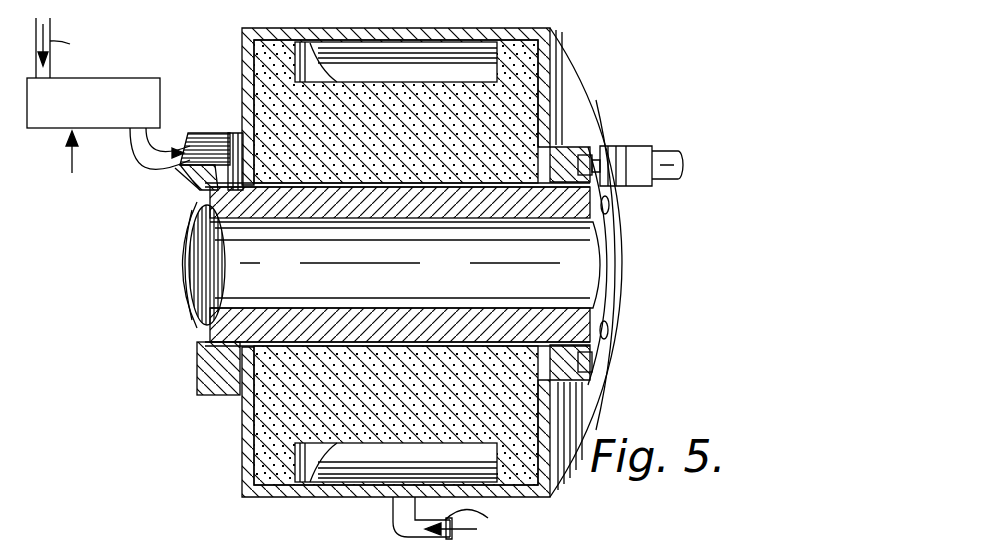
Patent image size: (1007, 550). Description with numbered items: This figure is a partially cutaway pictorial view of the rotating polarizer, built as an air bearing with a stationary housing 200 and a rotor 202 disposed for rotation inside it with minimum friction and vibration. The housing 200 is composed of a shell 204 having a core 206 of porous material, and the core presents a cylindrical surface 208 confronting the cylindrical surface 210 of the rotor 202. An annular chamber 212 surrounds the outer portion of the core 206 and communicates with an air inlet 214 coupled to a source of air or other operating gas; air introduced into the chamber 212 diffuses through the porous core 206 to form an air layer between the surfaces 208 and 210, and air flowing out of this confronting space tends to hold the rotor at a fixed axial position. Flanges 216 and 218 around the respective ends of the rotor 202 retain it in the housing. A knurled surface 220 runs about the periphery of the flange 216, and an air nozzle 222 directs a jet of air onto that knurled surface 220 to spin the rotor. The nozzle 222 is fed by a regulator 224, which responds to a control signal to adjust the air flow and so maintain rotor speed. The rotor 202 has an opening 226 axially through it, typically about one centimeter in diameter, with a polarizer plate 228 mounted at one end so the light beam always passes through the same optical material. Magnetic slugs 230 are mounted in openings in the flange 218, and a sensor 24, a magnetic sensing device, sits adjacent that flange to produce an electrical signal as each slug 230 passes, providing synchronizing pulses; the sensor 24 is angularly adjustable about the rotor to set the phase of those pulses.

The stationary housing 200 is at (564, 52).
The rotor 202 is at (588, 207).
The shell 204 is at (256, 30).
The core 206 is at (517, 123).
The cylindrical surface 208 is at (290, 184).
The cylindrical surface 210 is at (297, 188).
The annular chamber 212 is at (414, 70).
The air inlet 214 is at (402, 521).
The flange 216 is at (204, 194).
The flange 218 is at (580, 381).
The knurled surface 220 is at (200, 138).
The air nozzle 222 is at (147, 167).
The regulator 224 is at (42, 124).
The opening 226 is at (592, 268).
The polarizer plate 228 is at (201, 277).
The magnetic slugs 230 is at (590, 356).
The sensor 24 is at (640, 147).